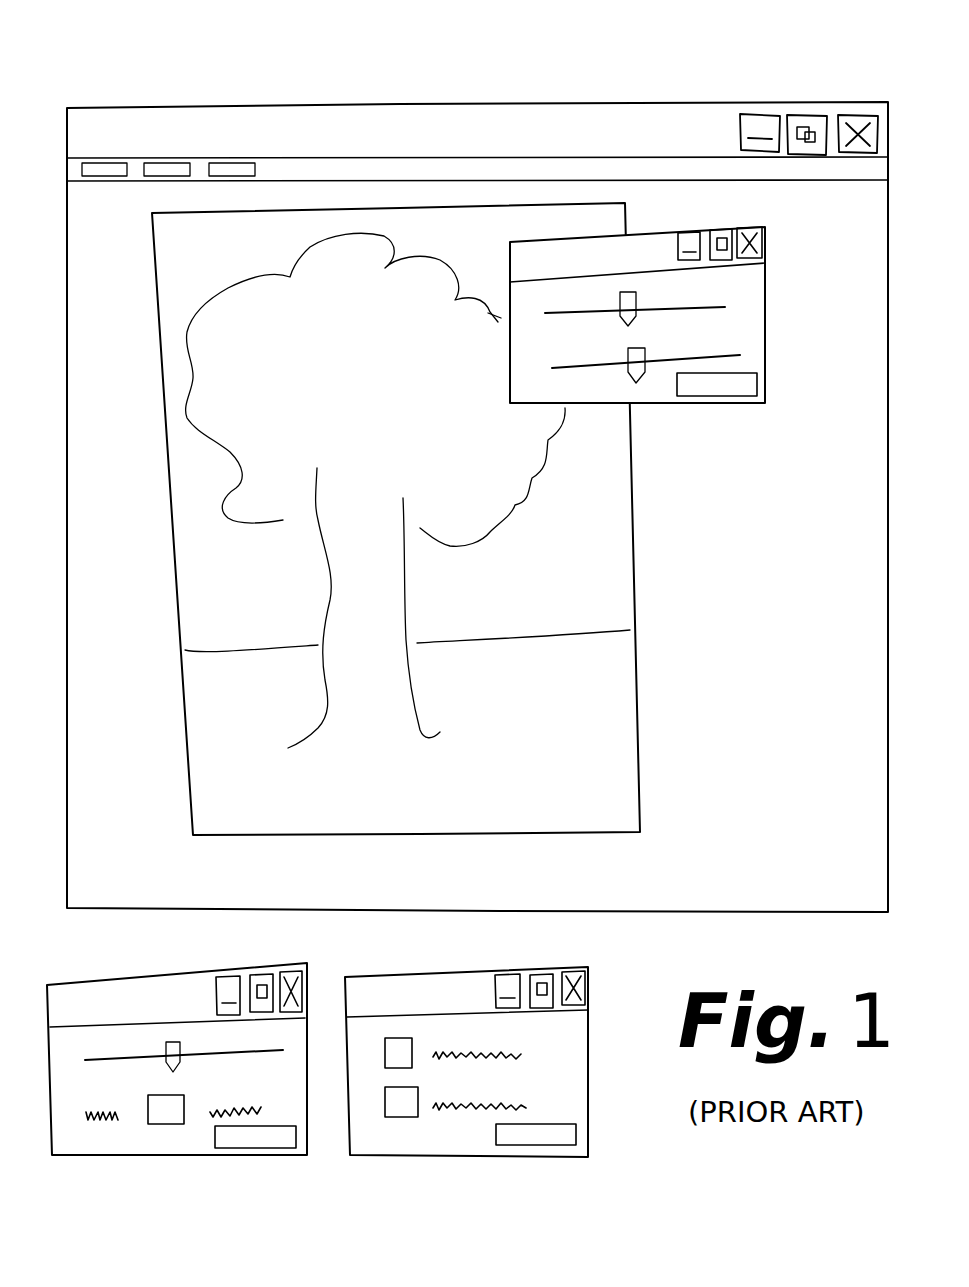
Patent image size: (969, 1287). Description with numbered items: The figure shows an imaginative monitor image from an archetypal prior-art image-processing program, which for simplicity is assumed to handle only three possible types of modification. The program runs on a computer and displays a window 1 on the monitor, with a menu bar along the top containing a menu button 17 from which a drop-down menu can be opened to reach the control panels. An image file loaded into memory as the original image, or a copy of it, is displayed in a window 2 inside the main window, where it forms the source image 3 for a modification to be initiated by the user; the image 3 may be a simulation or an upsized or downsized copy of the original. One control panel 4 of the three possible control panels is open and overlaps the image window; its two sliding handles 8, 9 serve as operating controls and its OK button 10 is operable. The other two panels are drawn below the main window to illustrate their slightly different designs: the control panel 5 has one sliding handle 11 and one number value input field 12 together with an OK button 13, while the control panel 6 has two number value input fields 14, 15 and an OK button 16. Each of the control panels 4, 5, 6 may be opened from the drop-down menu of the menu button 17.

The window 1 is at (545, 98).
The window 2 is at (640, 565).
The source image 3 is at (364, 387).
The control panel 4 is at (690, 372).
The control panel 5 is at (201, 1092).
The control panel 6 is at (487, 1093).
The sliding handle 8 is at (708, 303).
The sliding handle 9 is at (708, 352).
The OK button 10 is at (748, 373).
The sliding handle 11 is at (200, 1053).
The number value input field 12 is at (148, 1098).
The OK button 13 is at (280, 1148).
The number value input field 14 is at (415, 1045).
The number value input field 15 is at (418, 1093).
The OK button 16 is at (553, 1145).
The menu button 17 is at (168, 160).